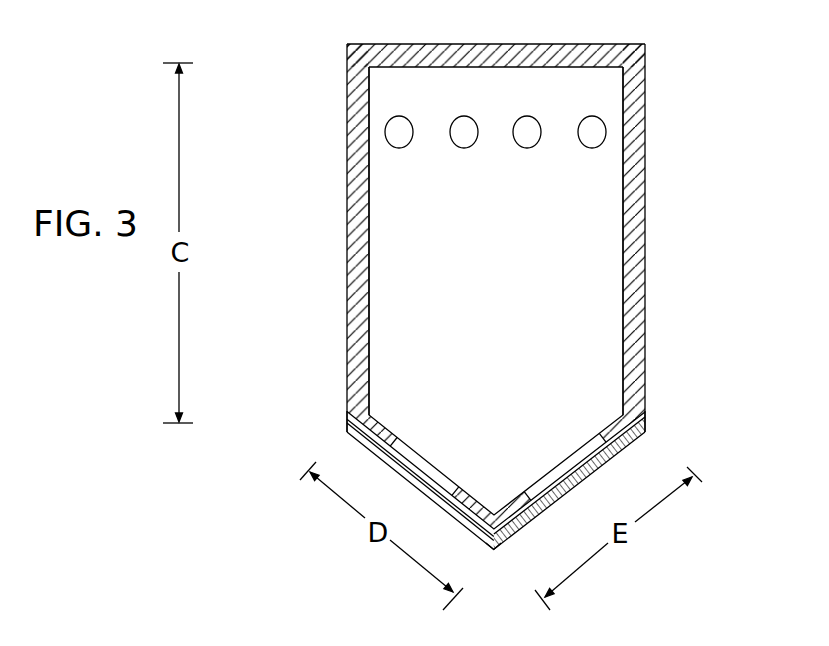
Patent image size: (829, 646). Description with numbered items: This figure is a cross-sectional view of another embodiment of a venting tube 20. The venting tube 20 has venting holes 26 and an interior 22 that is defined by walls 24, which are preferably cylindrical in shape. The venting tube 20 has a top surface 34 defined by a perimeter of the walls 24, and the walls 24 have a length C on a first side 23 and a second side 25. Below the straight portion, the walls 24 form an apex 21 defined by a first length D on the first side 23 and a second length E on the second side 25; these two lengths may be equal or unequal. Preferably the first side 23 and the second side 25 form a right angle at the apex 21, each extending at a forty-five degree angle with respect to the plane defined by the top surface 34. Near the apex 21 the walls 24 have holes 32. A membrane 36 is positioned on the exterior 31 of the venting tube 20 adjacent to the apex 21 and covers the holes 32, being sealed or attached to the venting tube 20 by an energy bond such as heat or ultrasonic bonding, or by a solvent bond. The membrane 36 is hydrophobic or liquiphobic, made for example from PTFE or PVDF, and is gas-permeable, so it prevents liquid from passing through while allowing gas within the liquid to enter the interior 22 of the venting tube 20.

The venting tube 20 is at (300, 345).
The apex 21 is at (489, 562).
The interior 22 is at (585, 235).
The first side 23 is at (360, 426).
The walls 24 is at (645, 140).
The second side 25 is at (638, 433).
The venting holes 26 is at (399, 148).
The exterior 31 is at (350, 421).
The holes 32 is at (378, 415).
The top surface 34 is at (578, 44).
The membrane 36 is at (392, 462).